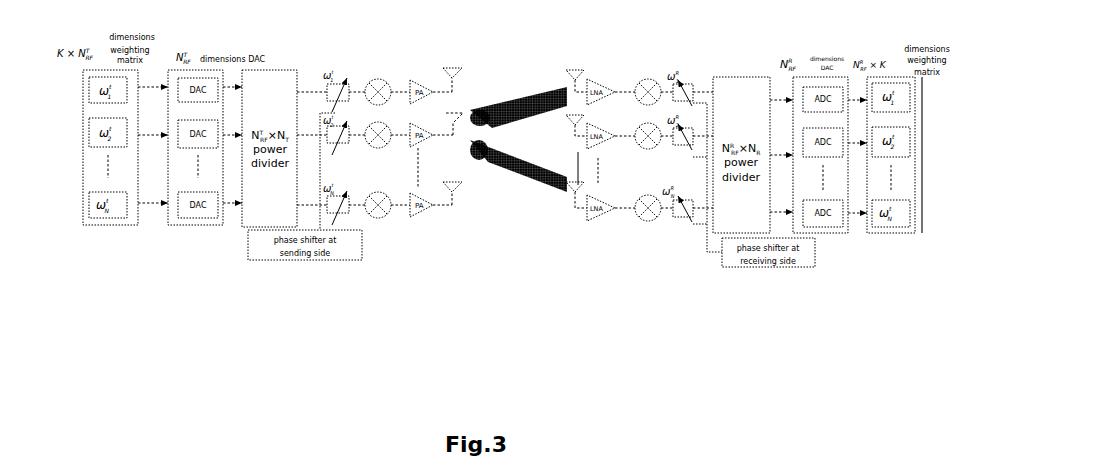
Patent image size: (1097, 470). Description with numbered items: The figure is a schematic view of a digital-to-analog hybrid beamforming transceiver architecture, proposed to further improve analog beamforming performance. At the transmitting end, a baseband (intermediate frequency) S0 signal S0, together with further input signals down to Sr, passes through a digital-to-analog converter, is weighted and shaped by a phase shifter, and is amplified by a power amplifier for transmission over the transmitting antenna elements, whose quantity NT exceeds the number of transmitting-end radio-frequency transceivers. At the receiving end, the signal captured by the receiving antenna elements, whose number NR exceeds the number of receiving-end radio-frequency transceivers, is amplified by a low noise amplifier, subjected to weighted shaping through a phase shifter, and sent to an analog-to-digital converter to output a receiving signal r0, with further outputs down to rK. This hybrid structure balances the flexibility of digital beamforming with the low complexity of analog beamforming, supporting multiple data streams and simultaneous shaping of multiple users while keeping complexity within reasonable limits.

The S0 signal S0 is at (48, 163).
The r-th input signal Sr is at (82, 173).
The receiving signal r0 is at (948, 185).
The K-th output signal rK is at (915, 213).
The quantity of antenna vibrator at the transmitting end NT is at (448, 56).
The number of antenna elements at the receiving end NR is at (569, 53).